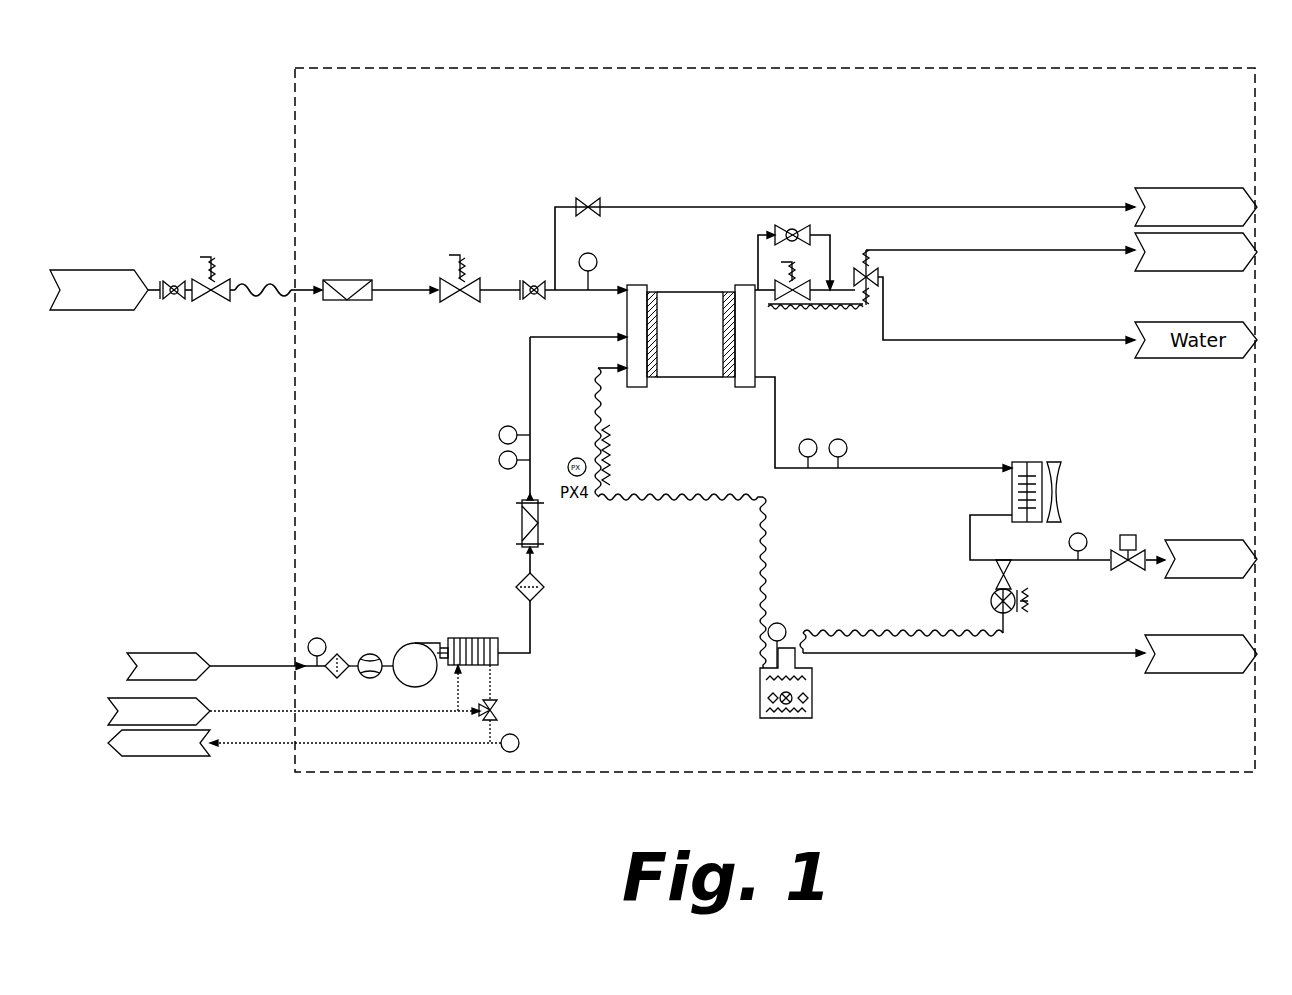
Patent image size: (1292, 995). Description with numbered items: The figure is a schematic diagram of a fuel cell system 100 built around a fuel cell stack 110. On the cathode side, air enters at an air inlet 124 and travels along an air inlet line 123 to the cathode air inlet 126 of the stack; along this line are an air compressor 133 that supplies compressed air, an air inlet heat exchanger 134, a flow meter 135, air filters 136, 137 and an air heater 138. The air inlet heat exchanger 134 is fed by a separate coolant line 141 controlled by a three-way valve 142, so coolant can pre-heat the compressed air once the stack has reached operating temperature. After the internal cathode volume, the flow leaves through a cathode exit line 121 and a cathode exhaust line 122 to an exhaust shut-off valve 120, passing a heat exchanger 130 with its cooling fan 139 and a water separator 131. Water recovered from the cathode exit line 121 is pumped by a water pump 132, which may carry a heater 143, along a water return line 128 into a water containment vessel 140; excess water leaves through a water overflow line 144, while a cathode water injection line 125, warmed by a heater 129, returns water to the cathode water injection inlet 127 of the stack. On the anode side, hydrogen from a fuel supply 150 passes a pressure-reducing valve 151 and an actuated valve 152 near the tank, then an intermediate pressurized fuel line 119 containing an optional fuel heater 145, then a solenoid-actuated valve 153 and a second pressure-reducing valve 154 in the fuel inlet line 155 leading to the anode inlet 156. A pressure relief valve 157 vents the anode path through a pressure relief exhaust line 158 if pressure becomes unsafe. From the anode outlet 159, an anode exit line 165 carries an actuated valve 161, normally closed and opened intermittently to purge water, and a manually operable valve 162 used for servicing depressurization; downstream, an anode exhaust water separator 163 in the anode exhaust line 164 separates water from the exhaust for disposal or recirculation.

The fuel cell system 100 is at (1278, 62).
The fuel cell stack 110 is at (689, 282).
The intermediate pressurized fuel line 119 is at (248, 282).
The exhaust shut-off valve 120 is at (1134, 552).
The cathode exit line 121 is at (898, 465).
The cathode exhaust line 122 is at (1065, 562).
The air inlet line 123 is at (527, 372).
The air inlet 124 is at (293, 664).
The cathode water injection line 125 is at (700, 493).
The cathode air inlet 126 is at (625, 335).
The cathode water injection inlet 127 is at (624, 366).
The water return line 128 is at (890, 630).
The heater 129 is at (612, 450).
The heat exchanger 130 is at (1030, 460).
The water separator 131 is at (1006, 565).
The water pump 132 is at (990, 600).
The air compressor 133 is at (420, 645).
The air inlet heat exchanger 134 is at (498, 662).
The flow meter 135 is at (375, 654).
The air filter 136 is at (340, 654).
The air filter 137 is at (545, 592).
The air heater 138 is at (540, 527).
The cooling fan 139 is at (1062, 468).
The water containment vessel 140 is at (752, 666).
The coolant line 141 is at (272, 745).
The three-way valve 142 is at (500, 710).
The heater 143 is at (1028, 605).
The water overflow line 144 is at (960, 656).
The fuel heater 145 is at (345, 282).
The fuel supply 150 is at (100, 270).
The pressure-reducing valve 151 is at (172, 282).
The actuated valve 152 is at (210, 301).
The solenoid-actuated valve 153 is at (450, 282).
The pressure-reducing valve 154 is at (530, 282).
The fuel inlet line 155 is at (492, 293).
The anode inlet 156 is at (625, 288).
The pressure relief valve 157 is at (592, 200).
The pressure relief exhaust line 158 is at (960, 207).
The anode outlet 159 is at (760, 305).
The actuated valve 161 is at (812, 312).
The manually operable valve 162 is at (793, 226).
The anode exhaust water separator 163 is at (880, 272).
The anode exhaust line 164 is at (960, 250).
The anode exit line 165 is at (836, 286).